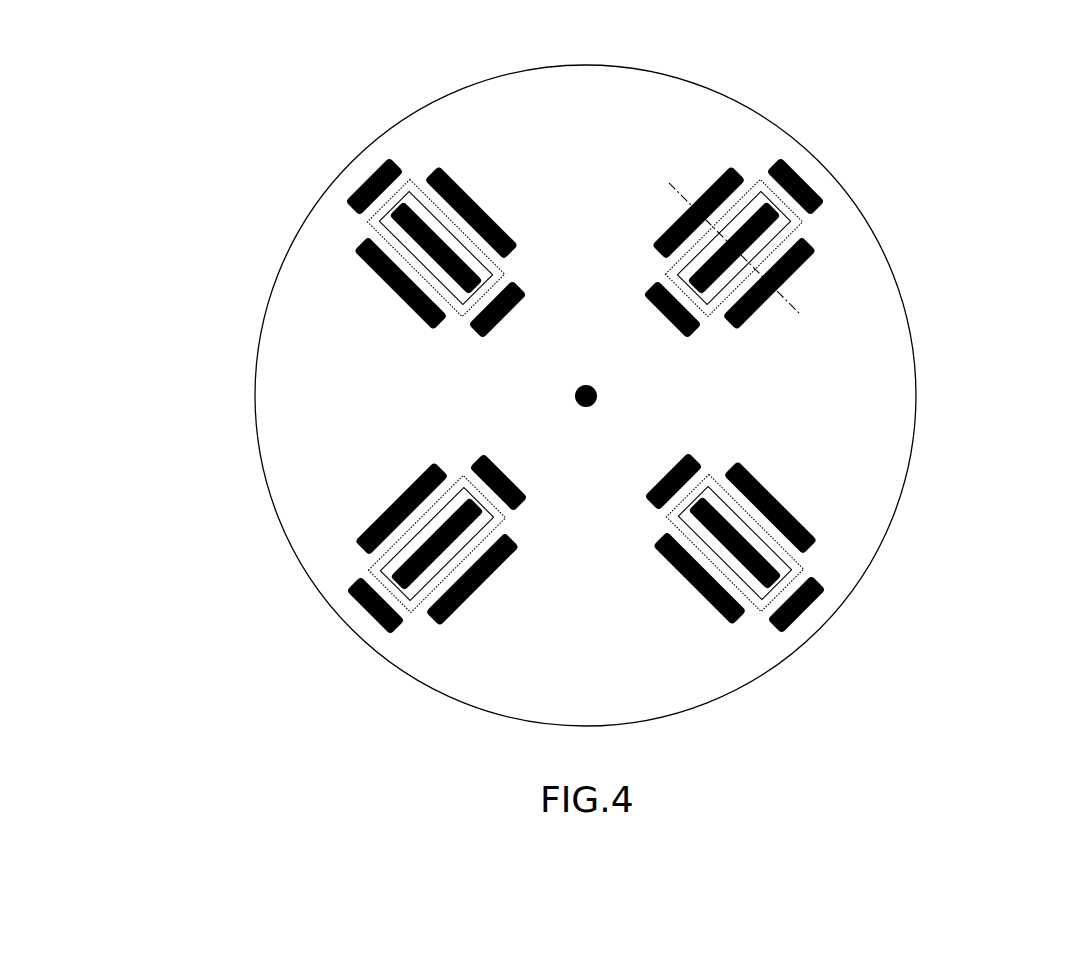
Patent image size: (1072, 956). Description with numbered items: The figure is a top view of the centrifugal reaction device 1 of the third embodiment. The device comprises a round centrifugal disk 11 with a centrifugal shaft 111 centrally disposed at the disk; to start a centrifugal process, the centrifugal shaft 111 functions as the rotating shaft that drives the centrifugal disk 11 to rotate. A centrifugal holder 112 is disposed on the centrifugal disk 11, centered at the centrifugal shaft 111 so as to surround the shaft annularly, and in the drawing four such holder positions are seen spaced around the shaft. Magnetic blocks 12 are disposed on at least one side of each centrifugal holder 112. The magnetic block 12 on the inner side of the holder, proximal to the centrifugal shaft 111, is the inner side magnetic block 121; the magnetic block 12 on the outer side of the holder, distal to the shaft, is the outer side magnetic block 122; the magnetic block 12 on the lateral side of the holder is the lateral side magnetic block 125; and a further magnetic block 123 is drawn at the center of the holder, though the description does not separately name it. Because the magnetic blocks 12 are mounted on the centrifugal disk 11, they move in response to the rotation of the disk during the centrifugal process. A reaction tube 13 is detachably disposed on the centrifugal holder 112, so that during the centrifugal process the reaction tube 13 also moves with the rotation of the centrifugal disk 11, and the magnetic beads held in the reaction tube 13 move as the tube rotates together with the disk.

The centrifugal reaction device 1 is at (234, 131).
The centrifugal disk 11 is at (852, 292).
The centrifugal shaft 111 is at (598, 395).
The centrifugal holder 112 is at (804, 229).
The magnetic block 12 is at (998, 408).
The inner side magnetic block 121 is at (700, 457).
The outer side magnetic block 122 is at (812, 605).
The central electrode 123 is at (795, 565).
The lateral side magnetic block 125 is at (780, 497).
The reaction tube 13 is at (760, 179).